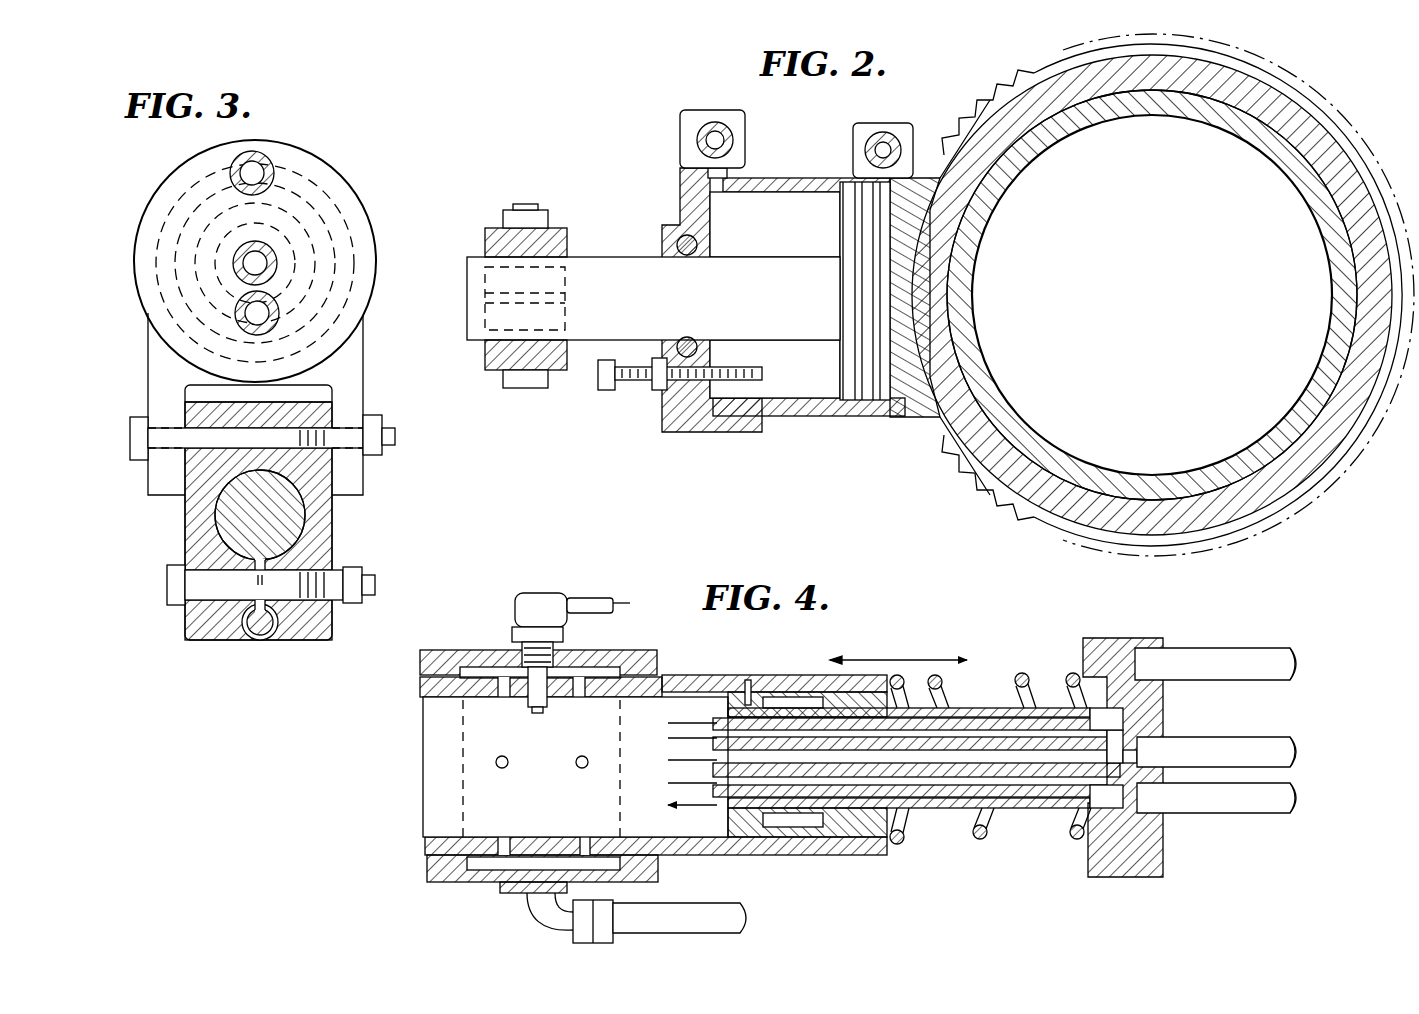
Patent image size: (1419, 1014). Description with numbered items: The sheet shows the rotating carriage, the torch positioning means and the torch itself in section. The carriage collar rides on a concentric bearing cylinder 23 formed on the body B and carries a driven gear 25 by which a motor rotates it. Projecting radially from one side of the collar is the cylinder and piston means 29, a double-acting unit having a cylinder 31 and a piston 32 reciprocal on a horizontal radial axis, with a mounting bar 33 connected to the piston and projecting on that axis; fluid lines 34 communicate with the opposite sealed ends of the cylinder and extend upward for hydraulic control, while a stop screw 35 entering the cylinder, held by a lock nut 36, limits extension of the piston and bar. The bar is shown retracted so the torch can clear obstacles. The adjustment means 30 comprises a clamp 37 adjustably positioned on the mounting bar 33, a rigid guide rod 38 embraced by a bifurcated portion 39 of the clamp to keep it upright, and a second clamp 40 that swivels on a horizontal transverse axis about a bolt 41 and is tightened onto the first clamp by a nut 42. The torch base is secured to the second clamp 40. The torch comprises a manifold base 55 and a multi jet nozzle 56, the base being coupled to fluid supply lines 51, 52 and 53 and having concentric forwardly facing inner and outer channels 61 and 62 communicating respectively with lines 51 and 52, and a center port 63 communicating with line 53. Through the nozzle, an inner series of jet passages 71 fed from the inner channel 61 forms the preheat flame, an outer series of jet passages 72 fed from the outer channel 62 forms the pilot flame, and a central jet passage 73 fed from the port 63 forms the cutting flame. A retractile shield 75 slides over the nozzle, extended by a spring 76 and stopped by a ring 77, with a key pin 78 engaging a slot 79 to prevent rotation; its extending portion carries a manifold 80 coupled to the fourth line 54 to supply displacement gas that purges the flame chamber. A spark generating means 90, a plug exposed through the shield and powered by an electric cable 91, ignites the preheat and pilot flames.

In FIG. 2, the bearing cylinder 23 is at (1024, 468).
In FIG. 2, the driven gear 25 is at (966, 84).
In FIG. 2, the cylinder and piston means 29 is at (803, 172).
In FIG. 3, the adjustment means 30 is at (184, 516).
In FIG. 2, the adjustment means 30 is at (533, 206).
In FIG. 2, the cylinder 31 is at (812, 410).
In FIG. 2, the piston 32 is at (840, 217).
In FIG. 3, the mounting bar 33 is at (278, 518).
In FIG. 2, the mounting bar 33 is at (620, 275).
In FIG. 2, the fluid lines 34 is at (723, 125).
In FIG. 2, the screw 35 is at (764, 373).
In FIG. 2, the lock nut 36 is at (660, 384).
In FIG. 3, the clamp 37 is at (322, 546).
In FIG. 3, the guide rod 38 is at (258, 636).
In FIG. 3, the bifurcated portion 39 is at (205, 630).
In FIG. 3, the second clamp 40 is at (352, 470).
In FIG. 3, the bolt 41 is at (200, 441).
In FIG. 3, the nut 42 is at (385, 420).
In FIG. 3, the fluid supply line 51 is at (262, 318).
In FIG. 4, the fluid supply line 51 is at (1245, 805).
In FIG. 3, the fluid supply line 52 is at (262, 165).
In FIG. 4, the fluid supply line 52 is at (1270, 652).
In FIG. 3, the fluid supply line 53 is at (258, 264).
In FIG. 4, the fluid supply line 53 is at (1275, 745).
In FIG. 4, the fluid supply line 54 is at (748, 918).
In FIG. 3, the manifold base 55 is at (342, 164).
In FIG. 4, the manifold base 55 is at (1107, 638).
In FIG. 4, the multi jet nozzle 56 is at (985, 690).
In FIG. 3, the inner channel 61 is at (290, 226).
In FIG. 4, the inner channel 61 is at (1118, 712).
In FIG. 3, the outer channel 62 is at (348, 233).
In FIG. 4, the outer channel 62 is at (1130, 665).
In FIG. 3, the center port 63 is at (260, 270).
In FIG. 4, the center port 63 is at (1125, 752).
In FIG. 4, the jet passages 71 is at (1040, 725).
In FIG. 4, the jet passages 72 is at (1020, 800).
In FIG. 4, the central jet passage 73 is at (932, 760).
In FIG. 4, the retractile shield 75 is at (797, 847).
In FIG. 4, the spring 76 is at (975, 838).
In FIG. 4, the ring 77 is at (745, 825).
In FIG. 4, the key pin 78 is at (750, 680).
In FIG. 4, the slot 79 is at (690, 686).
In FIG. 4, the manifold 80 is at (455, 885).
In FIG. 4, the spark generating means 90 is at (540, 717).
In FIG. 4, the electric cable 91 is at (595, 598).
In FIG. 2, the body B is at (1296, 445).